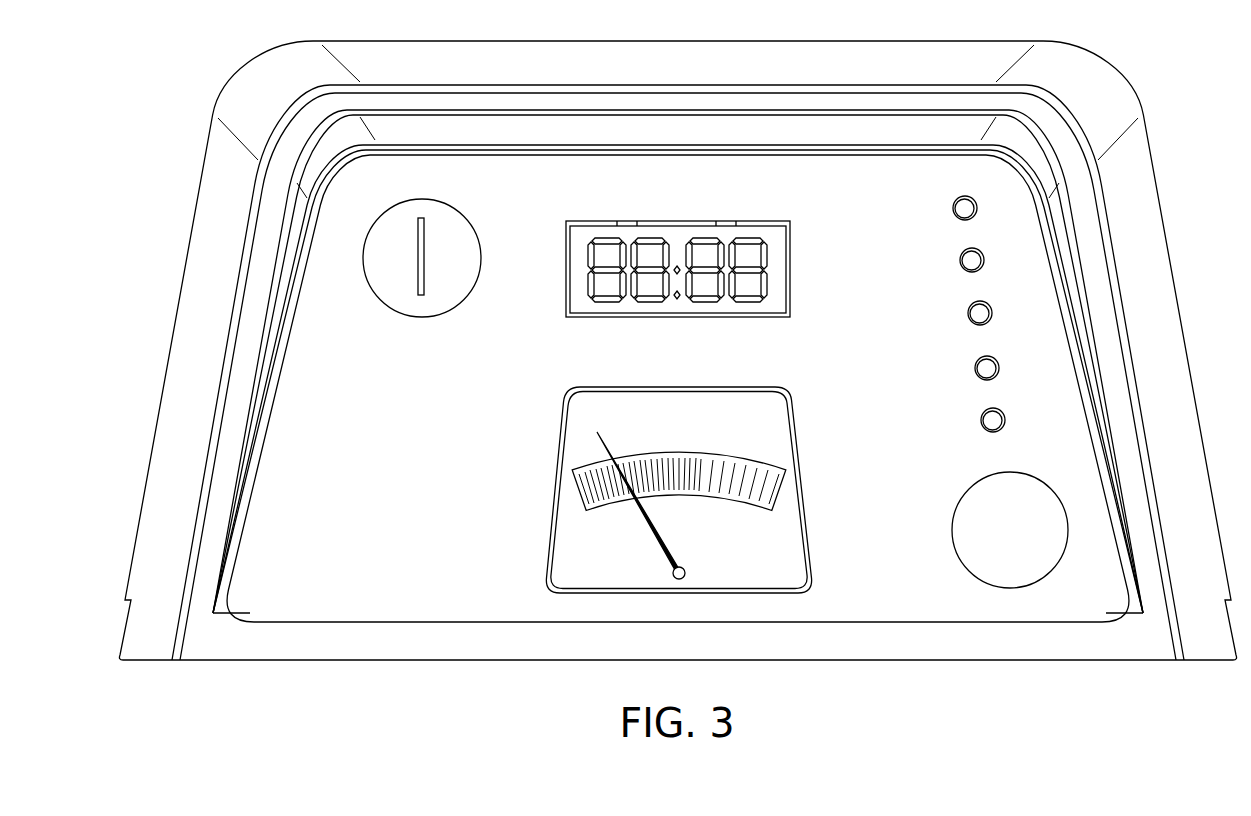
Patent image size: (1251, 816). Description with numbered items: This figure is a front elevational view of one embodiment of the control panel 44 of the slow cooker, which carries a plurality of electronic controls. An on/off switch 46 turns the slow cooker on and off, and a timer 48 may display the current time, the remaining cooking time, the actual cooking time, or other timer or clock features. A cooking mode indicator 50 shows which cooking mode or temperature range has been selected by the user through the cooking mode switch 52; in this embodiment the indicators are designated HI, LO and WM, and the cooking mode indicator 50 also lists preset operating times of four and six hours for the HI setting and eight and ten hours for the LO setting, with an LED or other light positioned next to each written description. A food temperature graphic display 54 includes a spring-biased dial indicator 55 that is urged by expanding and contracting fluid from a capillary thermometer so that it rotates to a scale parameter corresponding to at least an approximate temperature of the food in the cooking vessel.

The control panel 44 is at (1178, 344).
The on/off switch 46 is at (420, 307).
The timer 48 is at (674, 220).
The cooking mode indicator 50 is at (953, 197).
The cooking mode switch 52 is at (956, 531).
The food temperature graphic display 54 is at (550, 497).
The dial indicator 55 is at (656, 549).